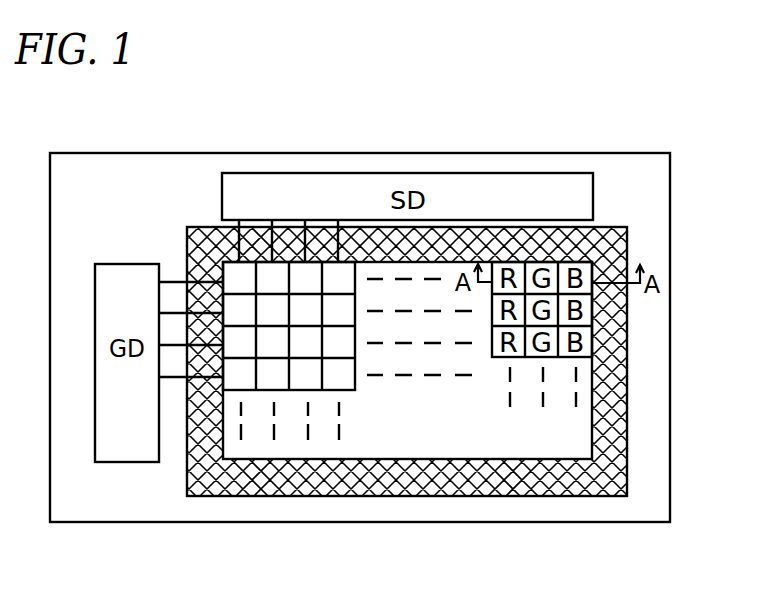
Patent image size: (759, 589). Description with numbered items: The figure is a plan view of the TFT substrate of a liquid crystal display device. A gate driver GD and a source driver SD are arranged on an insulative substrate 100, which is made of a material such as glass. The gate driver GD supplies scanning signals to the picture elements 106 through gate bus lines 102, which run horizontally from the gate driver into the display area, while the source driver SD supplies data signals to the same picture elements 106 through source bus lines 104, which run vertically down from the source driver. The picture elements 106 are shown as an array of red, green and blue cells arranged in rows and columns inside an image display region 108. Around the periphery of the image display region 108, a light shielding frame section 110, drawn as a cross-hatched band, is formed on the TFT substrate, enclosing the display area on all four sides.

The insulative substrate 100 is at (640, 175).
The gate bus lines 102 is at (169, 282).
The source bus lines 104 is at (300, 262).
The picture elements 106 is at (315, 391).
The image display region 108 is at (573, 442).
The light shielding frame section 110 is at (617, 322).